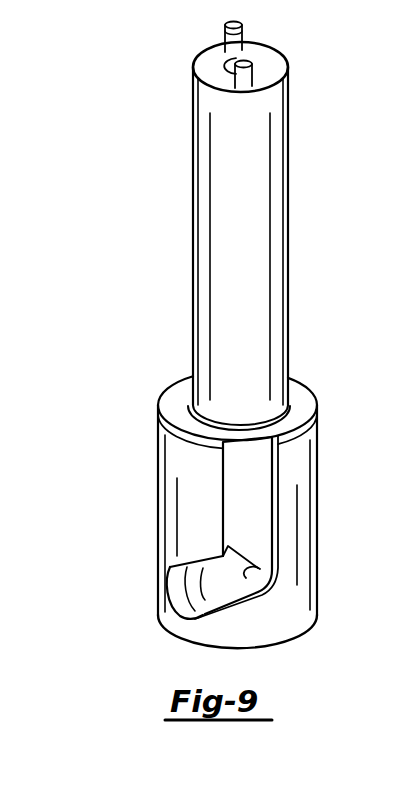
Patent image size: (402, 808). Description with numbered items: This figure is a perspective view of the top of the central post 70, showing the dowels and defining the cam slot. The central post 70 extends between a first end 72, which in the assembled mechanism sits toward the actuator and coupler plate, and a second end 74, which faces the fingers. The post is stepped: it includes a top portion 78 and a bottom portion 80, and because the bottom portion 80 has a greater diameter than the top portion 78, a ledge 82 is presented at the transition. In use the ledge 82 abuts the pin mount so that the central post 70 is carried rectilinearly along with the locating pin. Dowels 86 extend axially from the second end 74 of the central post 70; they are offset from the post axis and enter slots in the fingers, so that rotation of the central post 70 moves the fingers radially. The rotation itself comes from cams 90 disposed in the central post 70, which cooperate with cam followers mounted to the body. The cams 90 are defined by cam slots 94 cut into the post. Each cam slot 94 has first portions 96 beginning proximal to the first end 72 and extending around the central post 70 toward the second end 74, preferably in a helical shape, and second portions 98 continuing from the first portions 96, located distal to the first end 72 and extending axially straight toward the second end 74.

The central post 70 is at (245, 241).
The first end 72 is at (292, 623).
The second end 74 is at (190, 122).
The top portion 78 is at (200, 240).
The bottom portion 80 is at (302, 535).
The ledge 82 is at (177, 405).
The dowels 86 is at (243, 42).
The cams 90 is at (262, 464).
The cam slots 94 is at (238, 478).
The first portions 96 is at (182, 586).
The second portions 98 is at (228, 510).